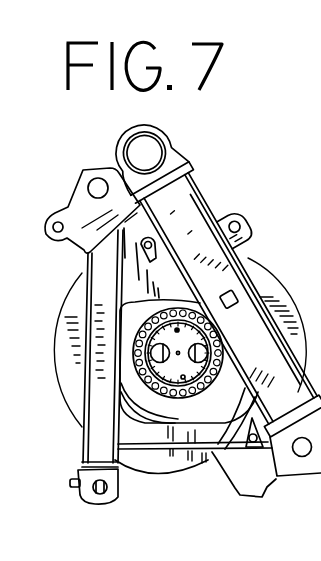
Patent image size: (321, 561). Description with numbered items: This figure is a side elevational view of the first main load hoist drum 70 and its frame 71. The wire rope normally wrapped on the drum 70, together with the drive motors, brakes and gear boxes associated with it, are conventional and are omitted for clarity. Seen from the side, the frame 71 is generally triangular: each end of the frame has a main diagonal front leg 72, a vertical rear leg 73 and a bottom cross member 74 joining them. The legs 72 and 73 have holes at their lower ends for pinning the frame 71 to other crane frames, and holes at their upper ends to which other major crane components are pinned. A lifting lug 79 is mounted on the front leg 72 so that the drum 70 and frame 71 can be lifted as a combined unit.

The first main load hoist drum 70 is at (77, 383).
The frame 71 is at (224, 204).
The main diagonal front leg 72 is at (235, 323).
The vertical rear leg 73 is at (103, 303).
The bottom cross member 74 is at (158, 452).
The lifting lug 79 is at (237, 270).